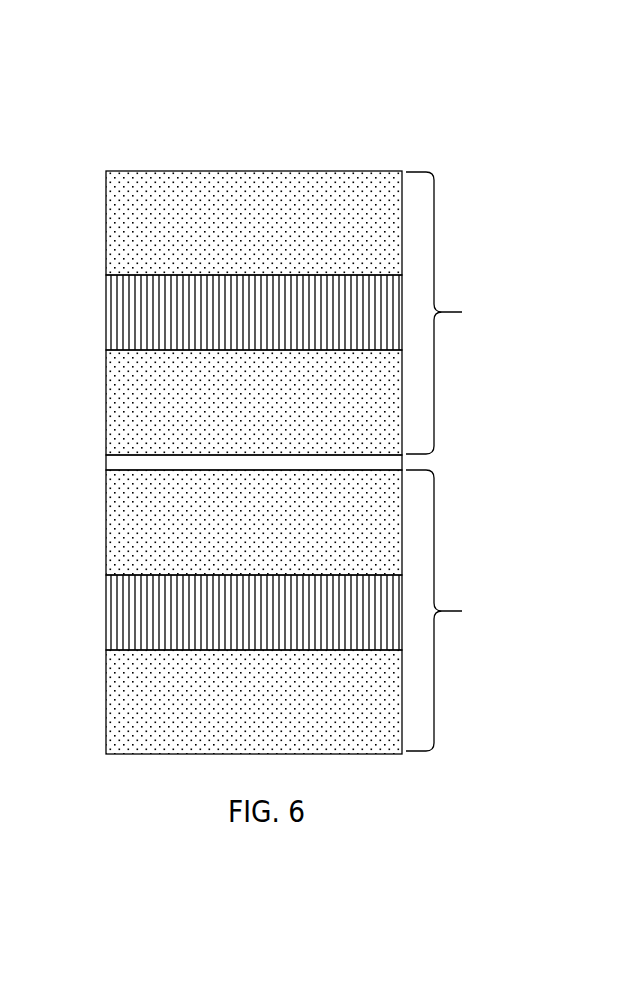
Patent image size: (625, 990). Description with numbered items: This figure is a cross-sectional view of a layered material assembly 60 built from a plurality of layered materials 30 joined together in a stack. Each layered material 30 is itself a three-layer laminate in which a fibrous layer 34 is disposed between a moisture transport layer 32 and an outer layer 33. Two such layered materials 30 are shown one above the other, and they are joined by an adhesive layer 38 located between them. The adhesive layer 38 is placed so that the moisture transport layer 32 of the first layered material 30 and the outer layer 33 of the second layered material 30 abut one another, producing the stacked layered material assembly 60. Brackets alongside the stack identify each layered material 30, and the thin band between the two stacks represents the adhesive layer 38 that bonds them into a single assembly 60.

The layered material assembly 60 is at (395, 90).
The layered material 30 is at (455, 461).
The outer layer 33 is at (148, 205).
The fibrous layer 34 is at (63, 657).
The moisture transport layer 32 is at (126, 397).
The adhesive layer 38 is at (130, 463).